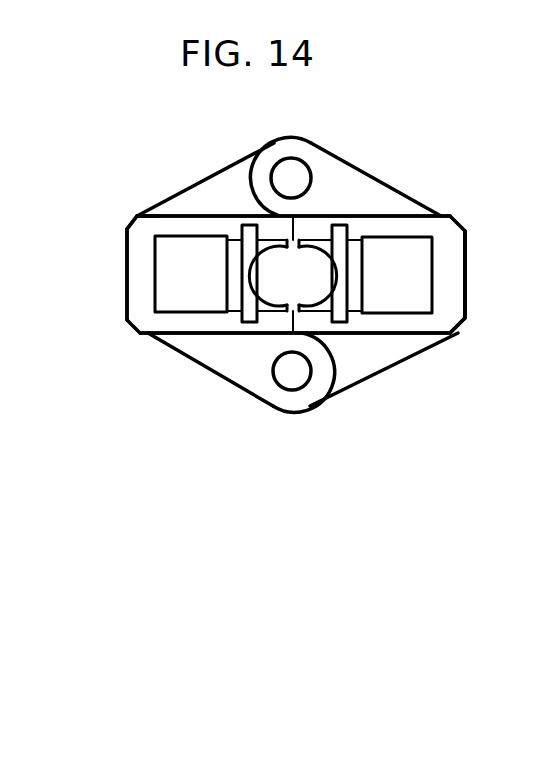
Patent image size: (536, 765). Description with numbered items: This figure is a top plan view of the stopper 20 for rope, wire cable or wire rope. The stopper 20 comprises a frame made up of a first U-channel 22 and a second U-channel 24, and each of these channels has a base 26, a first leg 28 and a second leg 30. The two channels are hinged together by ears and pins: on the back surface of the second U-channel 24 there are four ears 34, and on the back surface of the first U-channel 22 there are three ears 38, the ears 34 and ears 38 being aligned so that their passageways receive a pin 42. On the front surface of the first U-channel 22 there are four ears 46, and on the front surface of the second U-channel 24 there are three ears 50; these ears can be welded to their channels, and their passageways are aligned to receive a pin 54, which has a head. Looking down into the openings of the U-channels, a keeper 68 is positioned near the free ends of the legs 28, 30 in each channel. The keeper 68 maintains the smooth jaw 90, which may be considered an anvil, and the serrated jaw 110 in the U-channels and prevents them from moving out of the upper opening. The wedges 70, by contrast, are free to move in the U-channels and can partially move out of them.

The stopper 20 is at (131, 327).
The first U-channel 22 is at (458, 322).
The second U-channel 24 is at (134, 231).
The base 26 is at (139, 262).
The first leg 28 is at (192, 223).
The second leg 30 is at (210, 318).
The ears 34 is at (225, 362).
The ears 38 is at (355, 367).
The pin 42 is at (275, 410).
The ears 46 is at (345, 182).
The ears 50 is at (220, 188).
The pin 54 is at (290, 174).
The keeper 68 is at (252, 278).
The wedges 70 is at (208, 278).
The smooth jaw 90 is at (313, 248).
The serrated jaw 110 is at (265, 243).